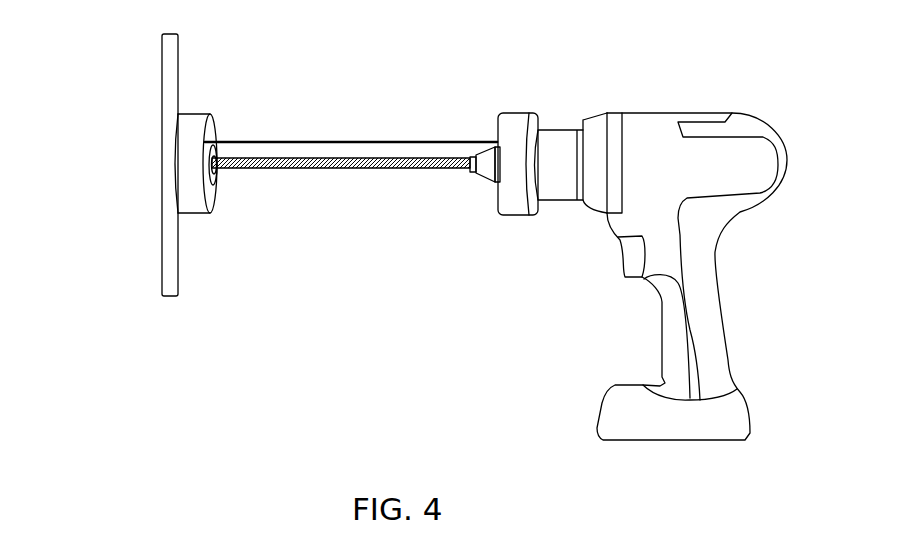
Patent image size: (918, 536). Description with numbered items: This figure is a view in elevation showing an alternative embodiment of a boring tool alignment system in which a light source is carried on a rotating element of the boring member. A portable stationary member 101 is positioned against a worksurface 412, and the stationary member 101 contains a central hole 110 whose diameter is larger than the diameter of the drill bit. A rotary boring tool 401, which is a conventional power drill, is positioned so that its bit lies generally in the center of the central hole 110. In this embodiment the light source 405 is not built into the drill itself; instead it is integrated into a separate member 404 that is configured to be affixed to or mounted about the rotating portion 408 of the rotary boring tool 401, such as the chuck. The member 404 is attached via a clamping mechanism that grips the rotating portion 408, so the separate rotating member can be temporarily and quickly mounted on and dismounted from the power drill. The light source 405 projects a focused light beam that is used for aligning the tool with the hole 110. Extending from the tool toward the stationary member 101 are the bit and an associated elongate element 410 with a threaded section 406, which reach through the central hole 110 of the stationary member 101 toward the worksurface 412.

The wall 412 is at (160, 96).
The portable stationary member 101 is at (195, 203).
The central hole 110 is at (217, 156).
The shaft 410 is at (373, 136).
The threaded rod 406 is at (295, 170).
The light source 405 is at (490, 138).
The member 404 is at (515, 106).
The rotating portion 408 is at (552, 185).
The rotary boring tool 401 is at (645, 138).